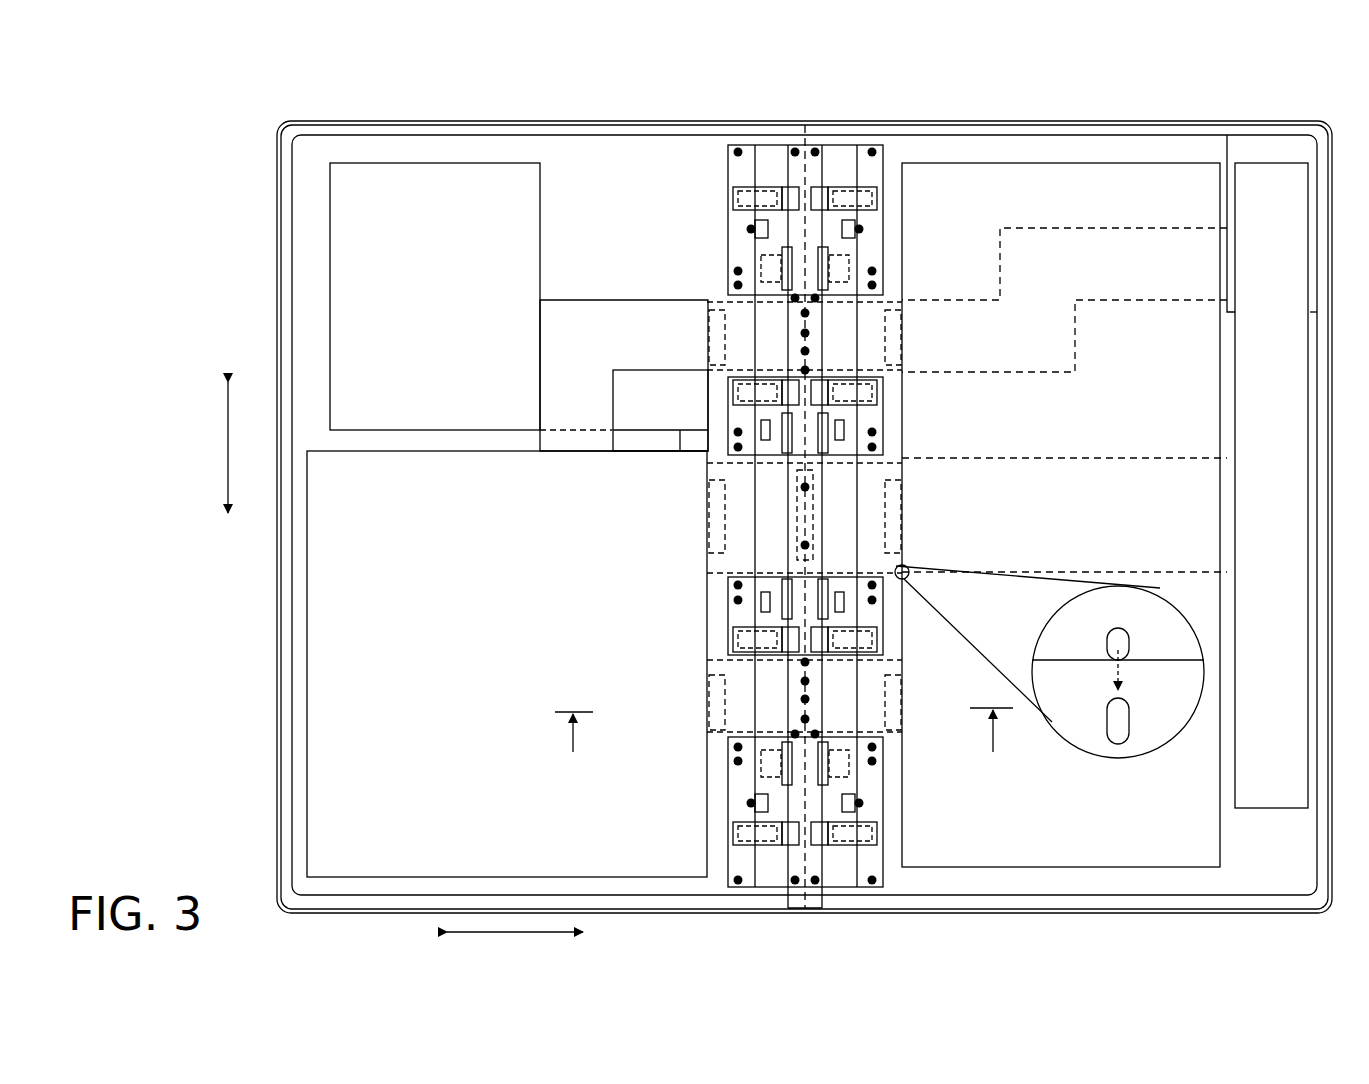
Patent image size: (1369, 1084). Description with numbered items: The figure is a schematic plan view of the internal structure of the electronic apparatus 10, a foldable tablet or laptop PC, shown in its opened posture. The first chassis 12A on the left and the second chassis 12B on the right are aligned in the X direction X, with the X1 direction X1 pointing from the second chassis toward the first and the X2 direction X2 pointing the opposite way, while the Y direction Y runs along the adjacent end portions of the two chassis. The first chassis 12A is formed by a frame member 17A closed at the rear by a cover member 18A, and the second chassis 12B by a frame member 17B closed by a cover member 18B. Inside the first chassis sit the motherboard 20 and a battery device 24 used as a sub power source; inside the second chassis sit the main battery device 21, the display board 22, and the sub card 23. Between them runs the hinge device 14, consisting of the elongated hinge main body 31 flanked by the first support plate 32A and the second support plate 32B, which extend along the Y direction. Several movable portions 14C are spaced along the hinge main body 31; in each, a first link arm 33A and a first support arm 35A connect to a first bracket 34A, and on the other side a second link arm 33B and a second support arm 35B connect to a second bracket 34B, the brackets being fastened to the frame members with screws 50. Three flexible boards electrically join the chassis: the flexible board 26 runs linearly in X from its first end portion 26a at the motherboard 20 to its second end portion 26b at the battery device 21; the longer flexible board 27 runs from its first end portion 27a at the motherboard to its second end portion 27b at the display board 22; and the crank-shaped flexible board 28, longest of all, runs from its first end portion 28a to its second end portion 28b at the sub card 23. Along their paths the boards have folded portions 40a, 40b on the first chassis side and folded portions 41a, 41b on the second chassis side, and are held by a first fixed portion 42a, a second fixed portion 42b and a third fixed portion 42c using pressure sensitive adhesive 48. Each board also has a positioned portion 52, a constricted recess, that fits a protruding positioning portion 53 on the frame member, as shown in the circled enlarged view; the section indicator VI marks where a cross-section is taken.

The electronic apparatus 10 is at (276, 69).
The first chassis 12A is at (425, 112).
The second chassis 12B is at (1085, 110).
The hinge device 14 is at (845, 138).
The movable portion 14C is at (724, 210).
The frame member 17A is at (520, 121).
The frame member 17B is at (1045, 121).
The cover member 18A is at (586, 148).
The cover member 18B is at (988, 150).
The motherboard 20 is at (374, 878).
The battery device 21 is at (1100, 870).
The display board 22 is at (1272, 810).
The sub card 23 is at (1268, 148).
The battery device 24 is at (336, 268).
The flexible board 26 is at (850, 715).
The first end portion 26a is at (728, 672).
The second end portion 26b is at (884, 712).
The flexible board 27 is at (736, 545).
The first end portion 27a is at (728, 540).
The second end portion 27b is at (884, 522).
The flexible board 28 is at (565, 304).
The first end portion 28a is at (568, 455).
The second end portion 28b is at (1226, 272).
The hinge main body 31 is at (795, 145).
The first support plate 32A is at (770, 145).
The second support plate 32B is at (845, 145).
The first link arm 33A is at (733, 265).
The second link arm 33B is at (884, 427).
The first bracket 34A is at (733, 235).
The second bracket 34B is at (884, 412).
The first support arm 35A is at (733, 198).
The second support arm 35B is at (884, 387).
The folded portion 40a is at (740, 310).
The second folded portion 40b is at (633, 551).
The folded portion 41a is at (895, 312).
The fourth folded portion 41b is at (1014, 479).
The first fixed portion 42a is at (715, 340).
The second fixed portion 42b is at (895, 338).
The third fixed portion 42c is at (888, 230).
The pressure sensitive adhesive 48 is at (850, 526).
The screw 50 is at (730, 140).
The positioned portion 52 is at (1130, 630).
The positioning portion 53 is at (1130, 742).
The section line VI is at (785, 732).
The X direction X is at (515, 948).
The X1 direction X1 is at (426, 930).
The X2 direction X2 is at (605, 930).
The Y direction Y is at (215, 447).